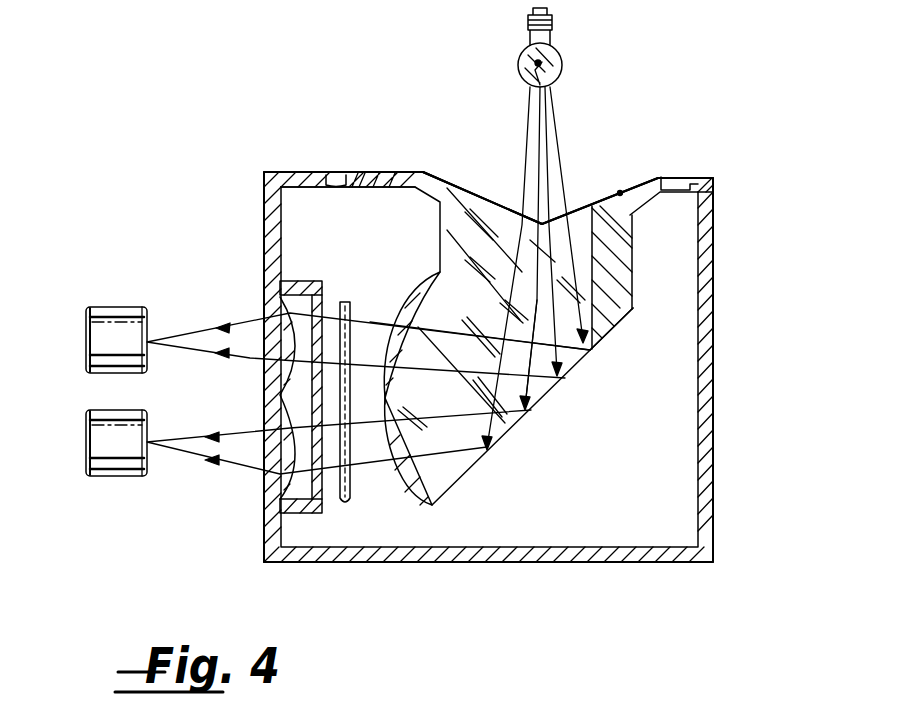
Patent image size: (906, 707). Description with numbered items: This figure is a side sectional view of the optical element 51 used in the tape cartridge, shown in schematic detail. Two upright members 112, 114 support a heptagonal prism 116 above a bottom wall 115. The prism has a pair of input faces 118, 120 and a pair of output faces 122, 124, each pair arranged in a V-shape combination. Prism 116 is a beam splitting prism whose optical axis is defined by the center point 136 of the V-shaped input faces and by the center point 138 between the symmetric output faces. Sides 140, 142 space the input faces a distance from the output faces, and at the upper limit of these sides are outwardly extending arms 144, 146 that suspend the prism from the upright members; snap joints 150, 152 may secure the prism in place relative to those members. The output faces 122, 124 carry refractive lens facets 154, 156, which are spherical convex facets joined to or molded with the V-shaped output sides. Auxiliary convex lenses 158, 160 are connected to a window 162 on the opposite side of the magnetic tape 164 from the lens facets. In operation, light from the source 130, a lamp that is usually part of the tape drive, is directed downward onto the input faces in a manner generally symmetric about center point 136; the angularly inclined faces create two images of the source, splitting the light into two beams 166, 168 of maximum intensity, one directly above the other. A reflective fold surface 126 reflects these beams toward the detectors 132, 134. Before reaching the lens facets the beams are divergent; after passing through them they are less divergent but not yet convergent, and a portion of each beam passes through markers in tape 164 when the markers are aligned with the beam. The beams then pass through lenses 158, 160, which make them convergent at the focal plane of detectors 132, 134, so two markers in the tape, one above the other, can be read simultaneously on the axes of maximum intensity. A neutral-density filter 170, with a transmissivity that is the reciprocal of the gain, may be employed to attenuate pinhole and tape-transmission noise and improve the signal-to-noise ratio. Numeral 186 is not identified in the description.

The optical element 51 is at (673, 98).
The upright member 112 is at (713, 300).
The upright member 114 is at (264, 207).
The bottom wall 115 is at (525, 546).
The heptagonal prism 116 is at (617, 308).
The input face 118 is at (465, 190).
The input face 120 is at (620, 192).
The output face 122 is at (415, 330).
The output face 124 is at (453, 500).
The reflective fold surface 126 is at (552, 398).
The light source 130 is at (563, 60).
The detector 132 is at (96, 333).
The detector 134 is at (96, 441).
The center point 136 is at (560, 182).
The center point 138 is at (387, 398).
The side 140 is at (440, 232).
The side 142 is at (633, 260).
The outwardly extending arm 144 is at (390, 172).
The outwardly extending arm 146 is at (670, 178).
The snap joint 150 is at (333, 172).
The snap joint 152 is at (712, 176).
The refractive lens facet 154 is at (410, 300).
The refractive lens facet 156 is at (420, 504).
The auxiliary convex lens 158 is at (293, 282).
The auxiliary convex lens 160 is at (296, 514).
The window 162 is at (262, 388).
The magnetic tape 164 is at (348, 492).
The beam 166 is at (503, 298).
The beam 168 is at (243, 322).
The neutral-density filter 170 is at (323, 300).
The light rays 186 is at (237, 462).